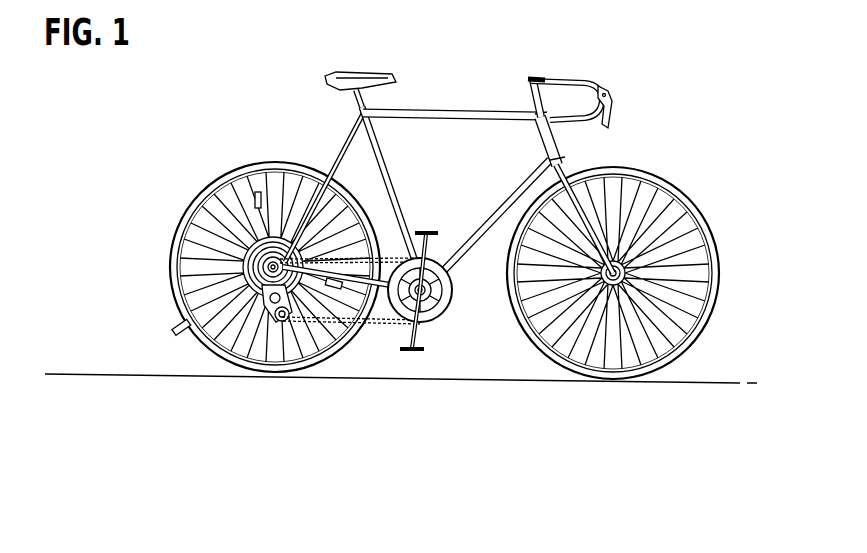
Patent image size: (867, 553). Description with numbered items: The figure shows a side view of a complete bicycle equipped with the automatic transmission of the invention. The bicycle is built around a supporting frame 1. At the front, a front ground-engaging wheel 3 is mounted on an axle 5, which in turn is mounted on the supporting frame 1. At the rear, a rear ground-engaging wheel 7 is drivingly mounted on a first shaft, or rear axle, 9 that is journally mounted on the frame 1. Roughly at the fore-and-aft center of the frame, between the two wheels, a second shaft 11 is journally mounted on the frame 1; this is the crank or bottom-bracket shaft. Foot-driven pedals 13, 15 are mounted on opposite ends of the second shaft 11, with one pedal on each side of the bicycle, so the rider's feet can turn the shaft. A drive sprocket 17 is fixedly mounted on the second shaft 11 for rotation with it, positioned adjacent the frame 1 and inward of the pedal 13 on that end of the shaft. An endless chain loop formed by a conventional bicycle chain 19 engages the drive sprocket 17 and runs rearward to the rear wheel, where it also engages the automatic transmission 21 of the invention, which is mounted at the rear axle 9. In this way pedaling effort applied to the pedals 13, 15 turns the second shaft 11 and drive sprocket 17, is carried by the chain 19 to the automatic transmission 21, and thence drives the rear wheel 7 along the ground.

The supporting frame 1 is at (452, 110).
The front ground-engaging wheel 3 is at (677, 190).
The axle 5 is at (626, 280).
The rear ground-engaging wheel 7 is at (208, 192).
The first shaft (rear axle) 9 is at (262, 265).
The second shaft 11 is at (428, 290).
The foot-driven pedal 13 is at (425, 352).
The foot-driven pedal 15 is at (432, 228).
The drive sprocket 17 is at (440, 314).
The bicycle chain 19 is at (376, 326).
The automatic transmission 21 is at (258, 305).